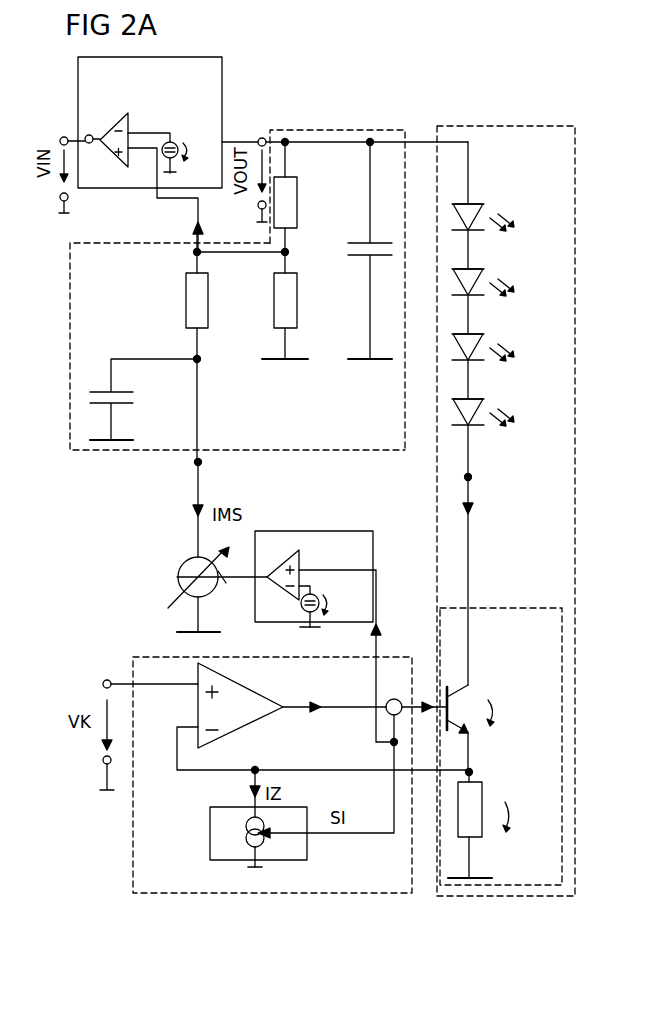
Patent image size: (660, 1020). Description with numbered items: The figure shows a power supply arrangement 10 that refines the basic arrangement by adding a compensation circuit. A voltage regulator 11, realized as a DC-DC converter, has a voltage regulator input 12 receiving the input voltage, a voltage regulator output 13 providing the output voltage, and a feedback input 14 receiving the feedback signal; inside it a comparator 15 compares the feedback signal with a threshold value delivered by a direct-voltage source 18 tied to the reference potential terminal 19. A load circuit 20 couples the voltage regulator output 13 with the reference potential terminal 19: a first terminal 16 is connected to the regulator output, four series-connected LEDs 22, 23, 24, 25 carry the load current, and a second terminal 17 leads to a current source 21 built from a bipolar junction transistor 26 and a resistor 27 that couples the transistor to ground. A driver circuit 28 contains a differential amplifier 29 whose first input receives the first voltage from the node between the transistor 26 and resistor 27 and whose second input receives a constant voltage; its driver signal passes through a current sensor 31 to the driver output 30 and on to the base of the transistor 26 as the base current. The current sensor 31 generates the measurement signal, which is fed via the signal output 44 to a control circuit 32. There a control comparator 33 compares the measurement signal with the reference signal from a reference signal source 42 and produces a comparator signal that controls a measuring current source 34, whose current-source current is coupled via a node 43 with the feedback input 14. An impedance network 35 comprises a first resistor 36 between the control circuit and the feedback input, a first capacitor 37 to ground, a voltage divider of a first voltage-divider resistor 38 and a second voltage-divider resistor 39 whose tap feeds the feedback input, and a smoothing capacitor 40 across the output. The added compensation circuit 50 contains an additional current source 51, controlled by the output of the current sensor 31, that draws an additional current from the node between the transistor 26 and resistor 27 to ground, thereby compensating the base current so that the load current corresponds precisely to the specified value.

The power supply arrangement 10 is at (462, 105).
The voltage regulator 11 is at (78, 92).
The voltage regulator input 12 is at (93, 145).
The voltage regulator output 13 is at (226, 137).
The feedback input 14 is at (157, 190).
The comparator 15 is at (124, 118).
The first terminal 16 is at (375, 140).
The second terminal 17 is at (474, 477).
The direct-voltage source 18 is at (172, 141).
The reference potential terminal 19 is at (64, 214).
The load circuit 20 is at (575, 158).
The current source 21 is at (503, 606).
The LED 22 is at (470, 208).
The LED 23 is at (470, 273).
The LED 24 is at (470, 338).
The LED 25 is at (470, 403).
The transistor 26 is at (450, 690).
The resistor 27 is at (472, 840).
The driver circuit 28 is at (335, 893).
The differential amplifier 29 is at (262, 702).
The driver output 30 is at (415, 687).
The current sensor 31 is at (394, 699).
The control circuit 32 is at (181, 589).
The control comparator 33 is at (291, 553).
The measuring current source 34 is at (181, 566).
The impedance network 35 is at (130, 452).
The first resistor 36 is at (186, 305).
The first capacitor 37 is at (150, 386).
The first voltage-divider resistor 38 is at (297, 186).
The second voltage-divider resistor 39 is at (297, 286).
The smoothing capacitor 40 is at (364, 242).
The reference signal source 42 is at (318, 596).
The node 43 is at (205, 465).
The signal output 44 is at (391, 745).
The compensation circuit 50 is at (237, 818).
The additional current source 51 is at (246, 829).